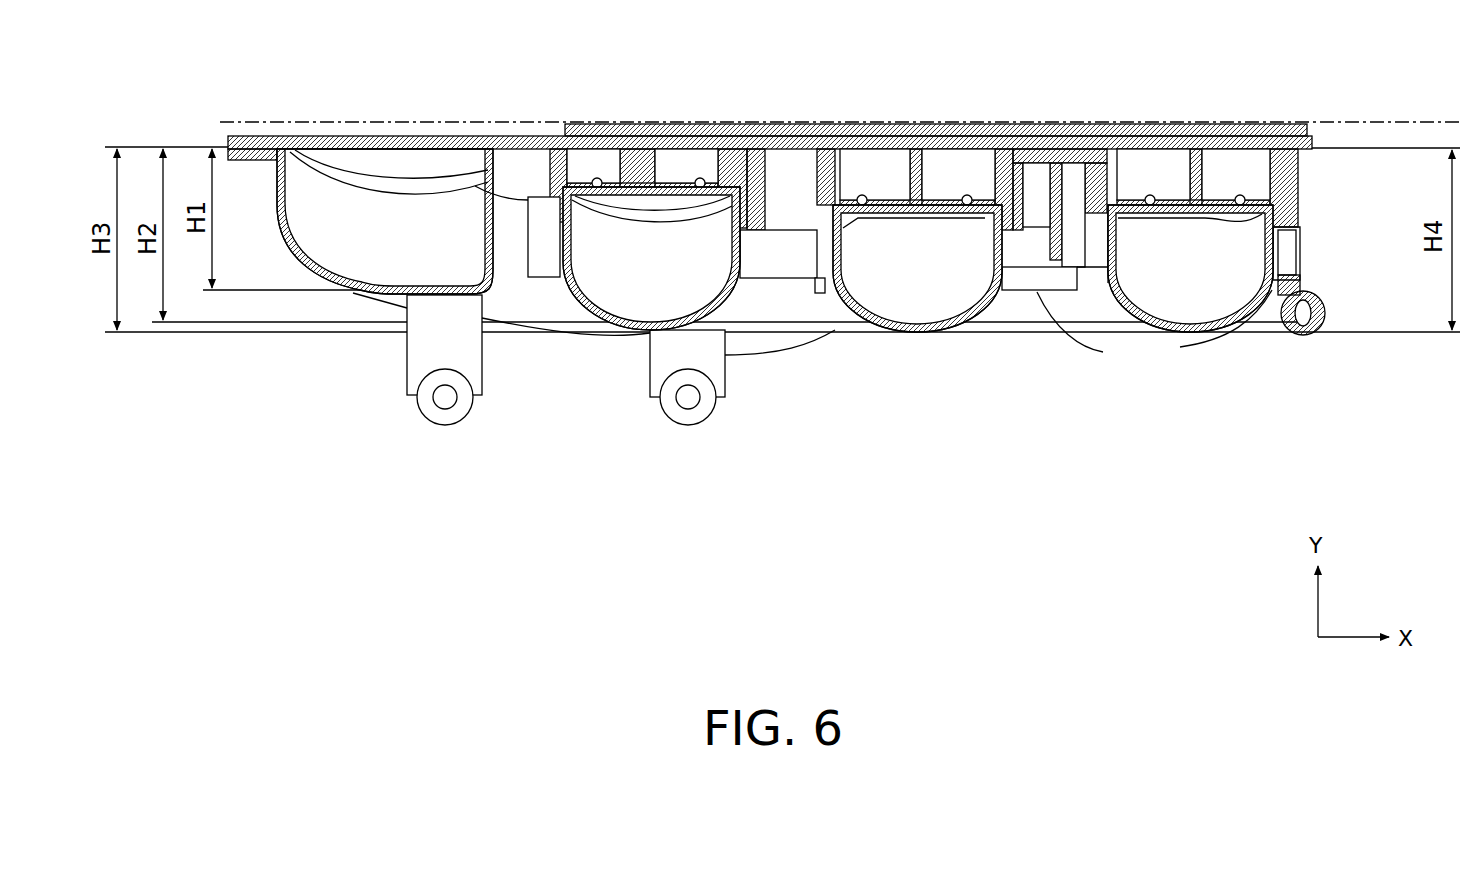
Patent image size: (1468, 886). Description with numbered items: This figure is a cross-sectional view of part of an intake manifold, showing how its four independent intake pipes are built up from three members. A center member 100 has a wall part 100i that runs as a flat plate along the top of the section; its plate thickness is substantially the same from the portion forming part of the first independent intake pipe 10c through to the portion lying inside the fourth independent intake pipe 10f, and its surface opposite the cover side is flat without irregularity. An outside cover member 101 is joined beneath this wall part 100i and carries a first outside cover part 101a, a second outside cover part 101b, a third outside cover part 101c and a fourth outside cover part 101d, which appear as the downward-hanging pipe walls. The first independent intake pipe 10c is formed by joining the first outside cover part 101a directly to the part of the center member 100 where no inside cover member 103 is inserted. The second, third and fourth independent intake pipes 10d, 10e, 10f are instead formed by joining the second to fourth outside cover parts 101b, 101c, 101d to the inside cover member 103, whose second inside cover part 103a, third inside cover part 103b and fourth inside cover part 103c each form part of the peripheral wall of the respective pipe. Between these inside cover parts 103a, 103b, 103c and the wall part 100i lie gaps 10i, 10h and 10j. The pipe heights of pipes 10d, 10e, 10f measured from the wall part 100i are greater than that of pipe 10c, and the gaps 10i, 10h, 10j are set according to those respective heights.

The center member 100 is at (1312, 143).
The wall part 100i is at (512, 134).
The outside cover member 101 is at (847, 351).
The first outside cover part 101a is at (353, 297).
The second outside cover part 101b is at (620, 343).
The third outside cover part 101c is at (898, 343).
The fourth outside cover part 101d is at (1170, 343).
The inside cover member 103 is at (949, 232).
The second inside cover part 103a is at (625, 232).
The third inside cover part 103b is at (876, 231).
The fourth inside cover part 103c is at (1150, 231).
The first independent intake pipe 10c is at (338, 228).
The second independent intake pipe 10d is at (672, 296).
The third independent intake pipe 10e is at (932, 304).
The fourth independent intake pipe 10f is at (1200, 304).
The gap 10h is at (876, 166).
The gap 10i is at (690, 166).
The gap 10j is at (1142, 166).